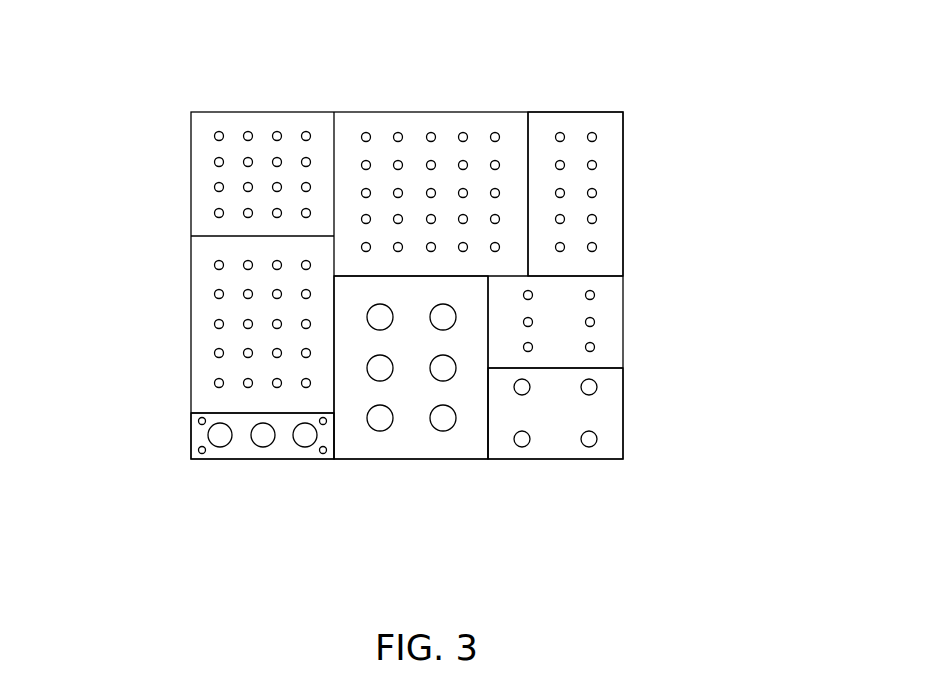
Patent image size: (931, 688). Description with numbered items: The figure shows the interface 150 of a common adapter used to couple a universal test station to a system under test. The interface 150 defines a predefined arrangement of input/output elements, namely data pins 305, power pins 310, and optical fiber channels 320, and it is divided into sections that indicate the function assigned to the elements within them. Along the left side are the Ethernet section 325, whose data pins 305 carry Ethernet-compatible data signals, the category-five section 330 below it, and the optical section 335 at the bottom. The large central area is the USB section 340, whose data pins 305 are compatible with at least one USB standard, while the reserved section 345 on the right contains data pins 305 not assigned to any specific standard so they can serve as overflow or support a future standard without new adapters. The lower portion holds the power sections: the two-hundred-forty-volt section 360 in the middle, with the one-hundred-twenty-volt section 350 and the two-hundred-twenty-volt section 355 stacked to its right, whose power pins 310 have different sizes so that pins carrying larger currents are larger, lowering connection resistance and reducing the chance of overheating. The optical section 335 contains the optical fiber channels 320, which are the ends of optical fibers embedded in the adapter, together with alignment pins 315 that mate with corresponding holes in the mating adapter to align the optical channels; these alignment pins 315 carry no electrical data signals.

The interface 150 is at (745, 48).
The data pins 305 is at (556, 134).
The power pins 310 is at (527, 349).
The alignment pins 315 is at (202, 425).
The optical fiber channels 320 is at (306, 441).
The Ethernet section 325 is at (176, 176).
The Cat5/5e section 330 is at (176, 313).
The optical section 335 is at (178, 438).
The USB section 340 is at (448, 97).
The reserved section 345 is at (700, 210).
The 120V section 350 is at (639, 340).
The 220V section 355 is at (636, 417).
The 240V section 360 is at (417, 472).